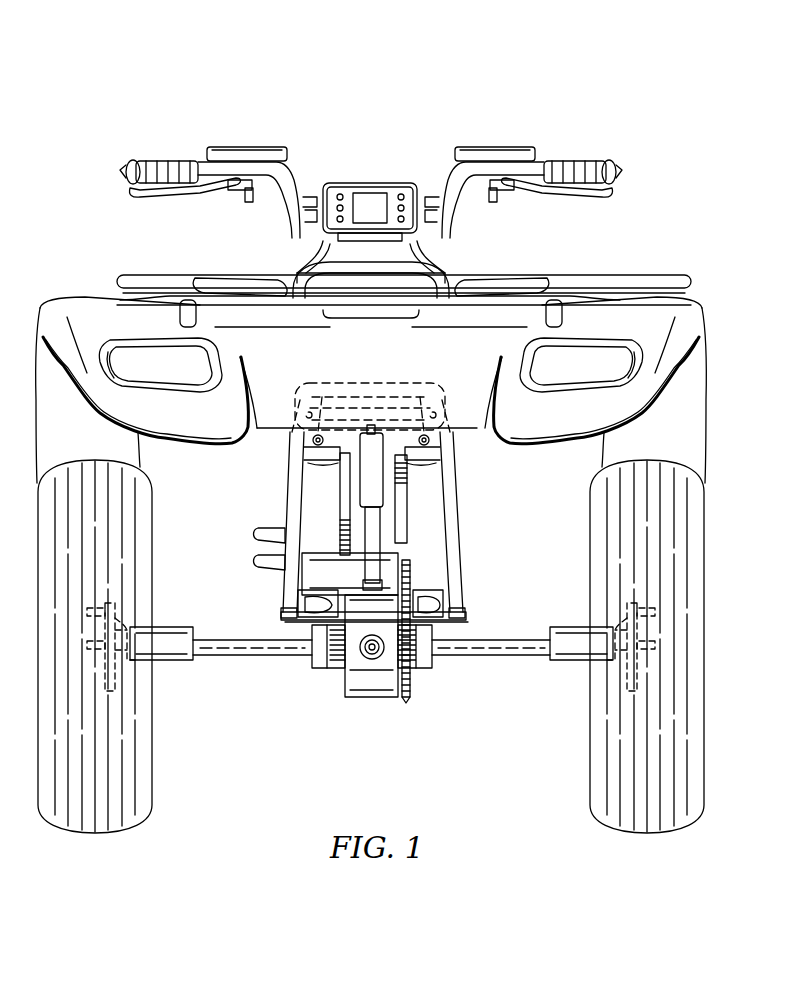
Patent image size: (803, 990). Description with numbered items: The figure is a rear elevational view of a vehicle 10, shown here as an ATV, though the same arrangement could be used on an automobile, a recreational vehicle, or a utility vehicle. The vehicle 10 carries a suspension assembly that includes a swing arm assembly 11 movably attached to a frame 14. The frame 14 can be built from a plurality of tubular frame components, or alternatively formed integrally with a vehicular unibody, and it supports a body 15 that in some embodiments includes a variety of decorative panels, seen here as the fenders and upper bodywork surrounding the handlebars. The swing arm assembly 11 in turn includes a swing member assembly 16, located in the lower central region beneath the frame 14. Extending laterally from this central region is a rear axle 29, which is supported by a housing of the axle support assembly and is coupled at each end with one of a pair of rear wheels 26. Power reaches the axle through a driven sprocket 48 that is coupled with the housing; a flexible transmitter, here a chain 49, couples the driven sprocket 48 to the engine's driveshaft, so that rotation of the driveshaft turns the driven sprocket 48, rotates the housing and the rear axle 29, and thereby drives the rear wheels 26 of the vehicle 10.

The vehicle 10 is at (260, 54).
The body 15 is at (108, 316).
The rear wheels 26 is at (92, 835).
The frame 14 is at (288, 497).
The swing arm assembly 11 is at (316, 772).
The swing member assembly 16 is at (266, 619).
The driven sprocket 48 is at (405, 700).
The chain 49 is at (411, 575).
The rear axle 29 is at (480, 655).